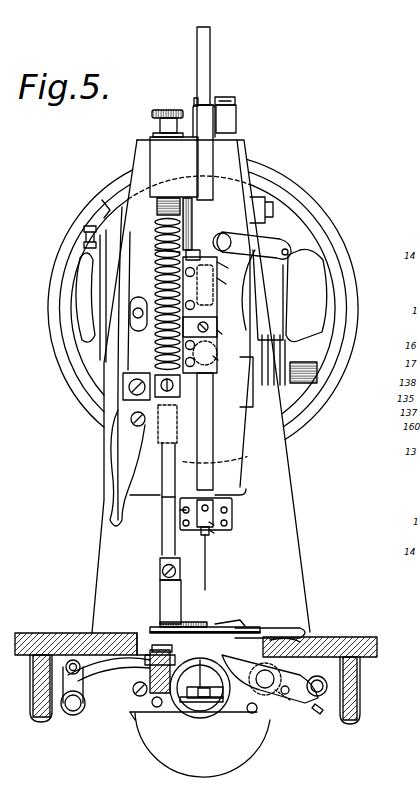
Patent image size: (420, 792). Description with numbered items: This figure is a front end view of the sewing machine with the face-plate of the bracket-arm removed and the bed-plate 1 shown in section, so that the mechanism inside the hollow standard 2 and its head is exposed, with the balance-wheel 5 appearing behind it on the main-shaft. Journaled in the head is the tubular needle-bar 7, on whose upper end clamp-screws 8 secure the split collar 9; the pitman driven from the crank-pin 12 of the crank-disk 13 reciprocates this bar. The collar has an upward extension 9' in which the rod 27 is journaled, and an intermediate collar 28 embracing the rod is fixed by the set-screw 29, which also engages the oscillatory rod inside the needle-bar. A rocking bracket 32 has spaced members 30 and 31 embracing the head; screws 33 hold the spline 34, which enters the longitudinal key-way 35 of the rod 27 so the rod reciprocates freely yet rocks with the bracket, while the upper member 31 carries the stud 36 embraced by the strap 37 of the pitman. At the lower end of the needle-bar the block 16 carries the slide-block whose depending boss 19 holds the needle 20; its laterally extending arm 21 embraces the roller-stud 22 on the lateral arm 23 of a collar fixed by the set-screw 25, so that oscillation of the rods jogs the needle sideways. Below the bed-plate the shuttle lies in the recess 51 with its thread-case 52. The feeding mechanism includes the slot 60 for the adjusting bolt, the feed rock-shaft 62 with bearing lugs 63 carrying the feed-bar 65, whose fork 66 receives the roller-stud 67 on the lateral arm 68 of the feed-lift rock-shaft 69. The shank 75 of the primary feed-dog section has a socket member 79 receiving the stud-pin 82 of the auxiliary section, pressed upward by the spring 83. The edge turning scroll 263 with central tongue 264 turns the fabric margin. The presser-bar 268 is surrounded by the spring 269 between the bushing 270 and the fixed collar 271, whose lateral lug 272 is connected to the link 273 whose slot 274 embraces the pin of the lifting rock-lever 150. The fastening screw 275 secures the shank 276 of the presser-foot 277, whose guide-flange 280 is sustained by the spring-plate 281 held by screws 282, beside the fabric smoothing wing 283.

The bed-plate 1 is at (28, 637).
The hollow standard 2 is at (102, 545).
The balance-wheel 5 is at (323, 201).
The tubular needle-bar 7 is at (205, 431).
The clamp-screws 8 is at (200, 315).
The split collar 9 is at (221, 361).
The upward extension 9' is at (228, 274).
The crank-pin 12 is at (222, 265).
The crank-disk 13 is at (224, 284).
The block 16 is at (233, 512).
The depending boss 19 is at (214, 534).
The needle 20 is at (207, 568).
The laterally extending arm 21 is at (213, 526).
The roller-stud 22 is at (203, 535).
The lateral arm 23 is at (180, 517).
The set-screw 25 is at (204, 505).
The rod 27 is at (210, 83).
The intermediate collar 28 is at (208, 327).
The set-screw 29 is at (215, 332).
The spaced member 30 is at (198, 247).
The upper member 31 is at (193, 117).
The rocking bracket 32 is at (205, 152).
The screws 33 is at (192, 222).
The spline 34 is at (182, 206).
The longitudinal key-way 35 is at (195, 100).
The stud 36 is at (236, 99).
The strap 37 is at (237, 111).
The recess 51 is at (200, 744).
The thread-case 52 is at (215, 706).
The slot 60 is at (154, 663).
The feed rock-shaft 62 is at (85, 705).
The bearing lugs 63 is at (80, 672).
The feed-bar 65 is at (109, 669).
The fork 66 is at (270, 684).
The roller-stud 67 is at (299, 703).
The lateral arm 68 is at (290, 684).
The feed-lift rock-shaft 69 is at (317, 686).
The shank 75 is at (172, 654).
The socket member 79 is at (160, 711).
The stud-pin 82 is at (141, 673).
The spring 83 is at (164, 704).
The lifting rock-lever 150 is at (132, 312).
The edge turning scroll 263 is at (350, 645).
The central tongue 264 is at (300, 639).
The presser-bar 268 is at (162, 540).
The spring 269 is at (180, 258).
The bushing 270 is at (160, 211).
The fixed collar 271 is at (178, 386).
The lateral lug 272 is at (132, 398).
The link 273 is at (136, 377).
The slot 274 is at (137, 300).
The fastening screw 275 is at (160, 571).
The shank 276 is at (168, 590).
The presser-foot 277 is at (165, 632).
The guide-flange 280 is at (240, 626).
The spring-plate 281 is at (194, 624).
The screws 282 is at (172, 622).
The fabric smoothing wing 283 is at (236, 618).